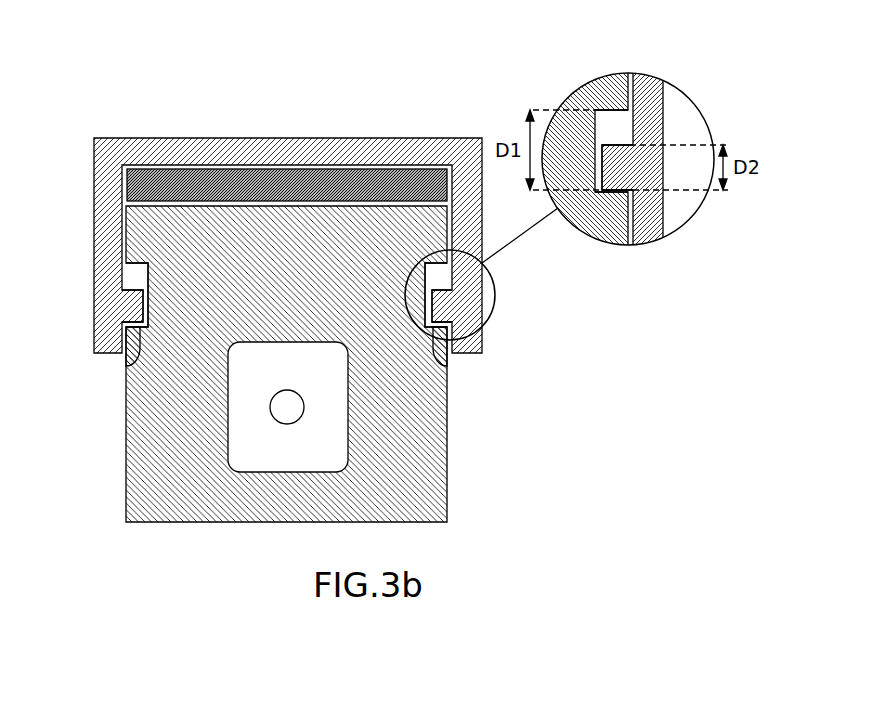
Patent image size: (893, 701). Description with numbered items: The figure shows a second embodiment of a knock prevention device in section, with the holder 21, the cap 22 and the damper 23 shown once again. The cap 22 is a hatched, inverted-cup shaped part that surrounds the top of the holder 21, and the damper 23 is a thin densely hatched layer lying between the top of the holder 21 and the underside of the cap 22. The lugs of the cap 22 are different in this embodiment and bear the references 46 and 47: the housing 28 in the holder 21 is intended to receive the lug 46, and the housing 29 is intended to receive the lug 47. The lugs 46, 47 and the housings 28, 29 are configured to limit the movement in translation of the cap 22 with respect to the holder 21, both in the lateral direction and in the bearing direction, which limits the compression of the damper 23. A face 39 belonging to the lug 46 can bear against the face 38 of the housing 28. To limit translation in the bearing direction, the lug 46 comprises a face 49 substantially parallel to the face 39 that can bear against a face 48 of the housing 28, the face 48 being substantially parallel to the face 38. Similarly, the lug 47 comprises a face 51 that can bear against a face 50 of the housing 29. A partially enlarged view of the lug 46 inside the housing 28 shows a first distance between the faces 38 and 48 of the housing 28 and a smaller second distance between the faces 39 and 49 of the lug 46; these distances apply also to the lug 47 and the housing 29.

The holder 21 is at (430, 457).
The cap 22 is at (378, 152).
The damper 23 is at (217, 178).
The housing 28 is at (425, 279).
The housing 29 is at (147, 292).
The face 38 is at (617, 108).
The face 39 is at (615, 147).
The lug 46 is at (443, 300).
The lug 47 is at (132, 300).
The face 48 is at (438, 343).
The face 49 is at (440, 316).
The face 50 is at (135, 362).
The face 51 is at (135, 316).